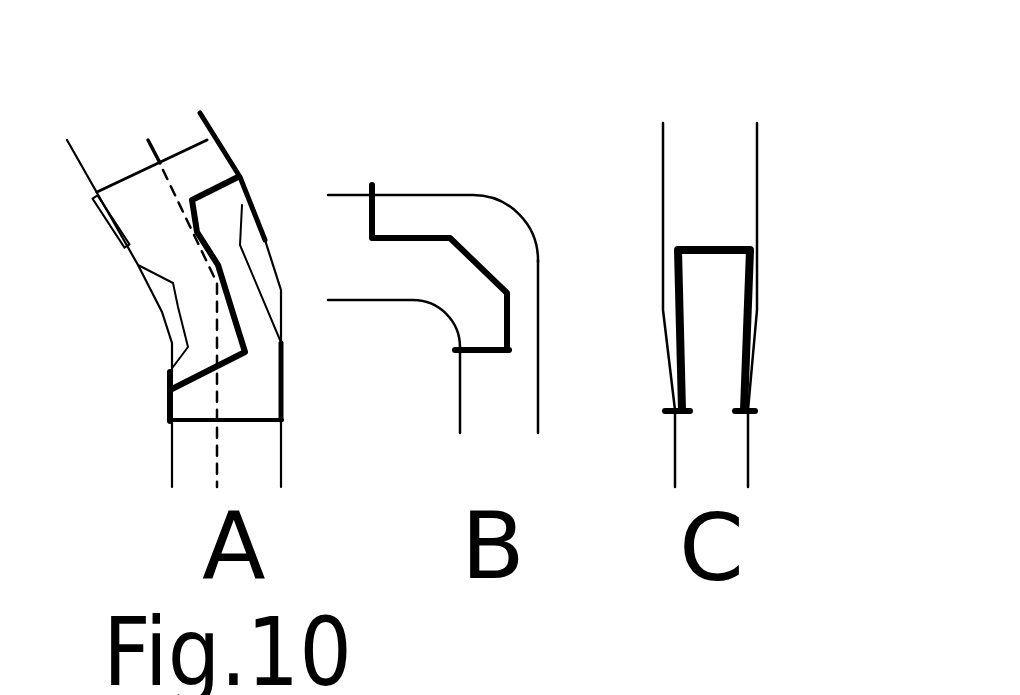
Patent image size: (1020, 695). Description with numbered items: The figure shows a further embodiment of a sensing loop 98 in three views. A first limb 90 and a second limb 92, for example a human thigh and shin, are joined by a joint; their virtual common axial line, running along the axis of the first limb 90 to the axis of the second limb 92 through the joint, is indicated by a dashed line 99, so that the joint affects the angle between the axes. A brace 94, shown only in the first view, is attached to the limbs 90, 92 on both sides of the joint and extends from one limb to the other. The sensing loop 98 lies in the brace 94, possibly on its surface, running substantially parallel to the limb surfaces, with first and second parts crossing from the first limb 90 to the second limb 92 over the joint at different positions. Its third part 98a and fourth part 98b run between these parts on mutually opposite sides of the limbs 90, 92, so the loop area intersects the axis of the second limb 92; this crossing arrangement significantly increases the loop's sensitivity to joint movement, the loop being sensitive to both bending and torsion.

The first limb 90 is at (125, 153).
The second limb 92 is at (488, 418).
The brace 94 is at (207, 170).
The sensing loop 98 is at (230, 268).
The third part of the sensor loop 98a is at (197, 381).
The fourth part of the sensor loop 98b is at (193, 223).
The dashed line 99 is at (160, 157).